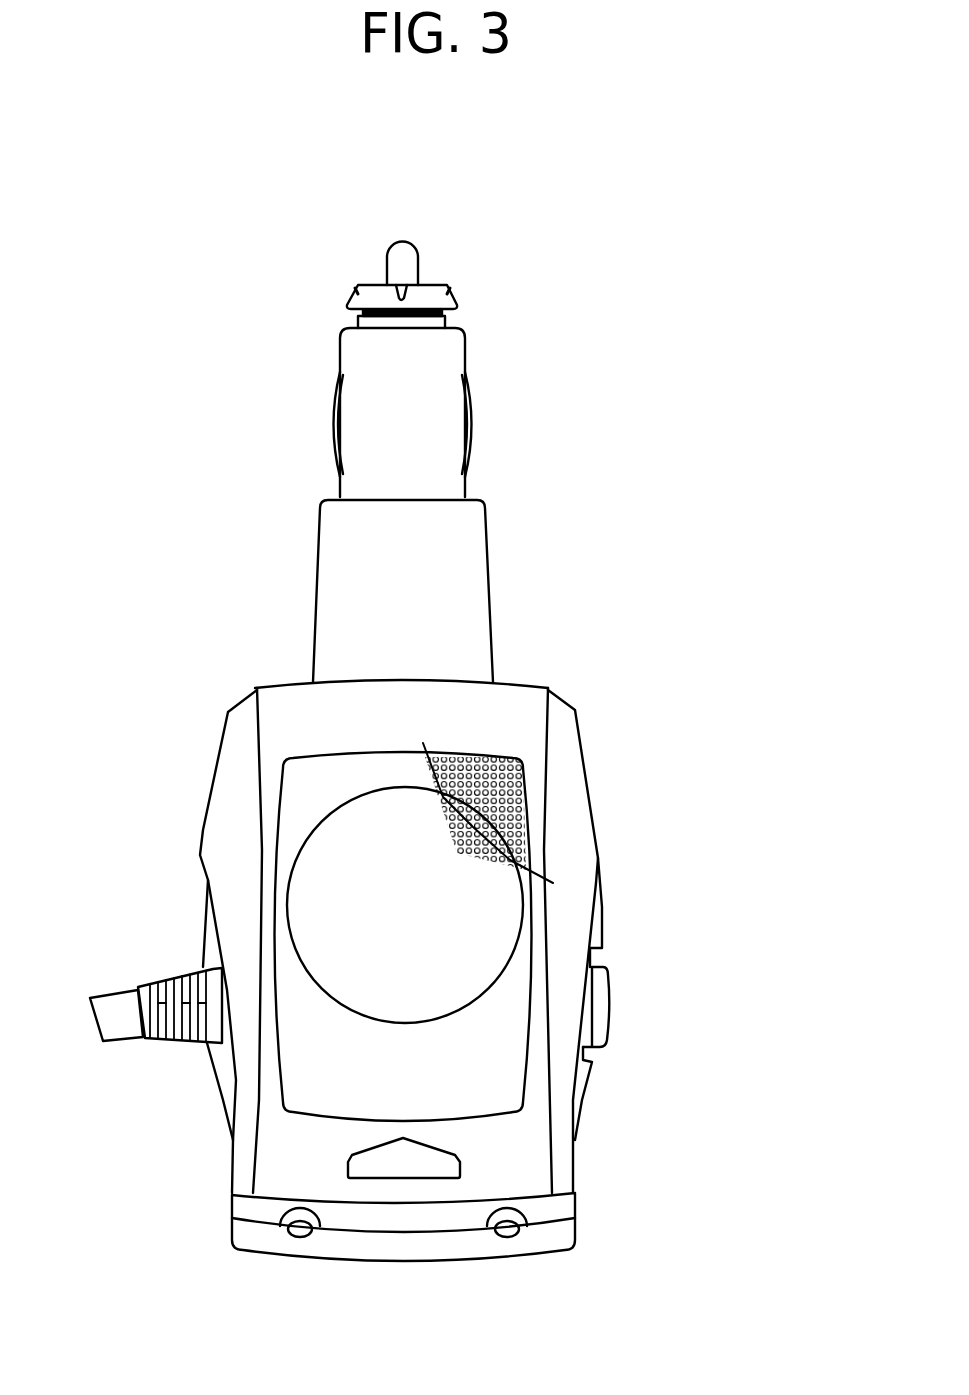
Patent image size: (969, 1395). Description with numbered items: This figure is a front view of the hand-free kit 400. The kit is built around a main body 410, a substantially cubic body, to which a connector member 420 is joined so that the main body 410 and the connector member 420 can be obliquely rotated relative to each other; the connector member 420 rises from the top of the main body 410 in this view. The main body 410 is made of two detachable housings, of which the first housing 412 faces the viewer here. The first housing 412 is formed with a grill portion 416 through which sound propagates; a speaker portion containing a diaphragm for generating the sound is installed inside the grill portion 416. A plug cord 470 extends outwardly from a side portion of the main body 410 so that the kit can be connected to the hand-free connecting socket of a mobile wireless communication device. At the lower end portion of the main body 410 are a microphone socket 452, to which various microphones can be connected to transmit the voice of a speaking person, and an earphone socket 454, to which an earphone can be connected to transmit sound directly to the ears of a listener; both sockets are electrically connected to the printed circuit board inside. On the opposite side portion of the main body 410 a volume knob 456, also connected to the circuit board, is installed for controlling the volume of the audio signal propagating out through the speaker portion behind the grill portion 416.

The hand-free kit 400 is at (228, 208).
The main body 410 is at (628, 770).
The first housing 412 is at (283, 722).
The grill portion 416 is at (340, 863).
The connector member 420 is at (513, 512).
The microphone socket 452 is at (300, 1237).
The earphone socket 454 is at (505, 1237).
The volume knob 456 is at (598, 1005).
The plug cord 470 is at (122, 1027).